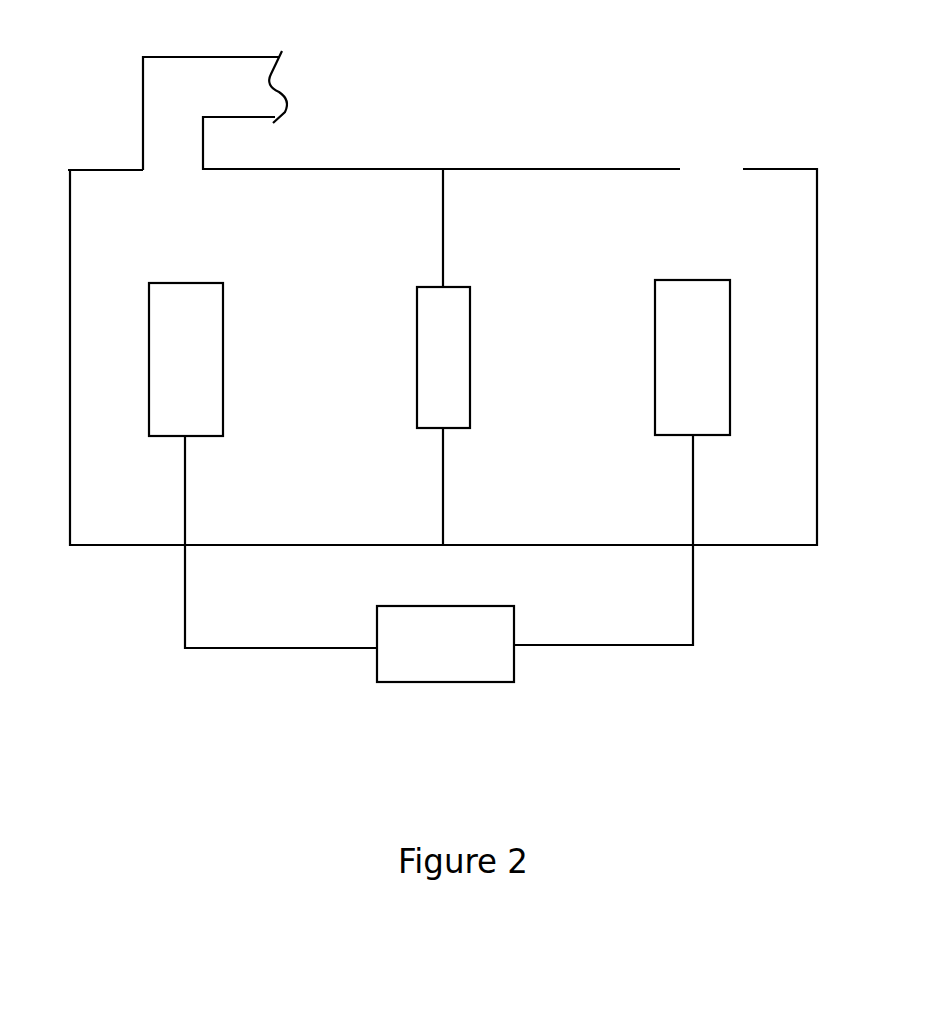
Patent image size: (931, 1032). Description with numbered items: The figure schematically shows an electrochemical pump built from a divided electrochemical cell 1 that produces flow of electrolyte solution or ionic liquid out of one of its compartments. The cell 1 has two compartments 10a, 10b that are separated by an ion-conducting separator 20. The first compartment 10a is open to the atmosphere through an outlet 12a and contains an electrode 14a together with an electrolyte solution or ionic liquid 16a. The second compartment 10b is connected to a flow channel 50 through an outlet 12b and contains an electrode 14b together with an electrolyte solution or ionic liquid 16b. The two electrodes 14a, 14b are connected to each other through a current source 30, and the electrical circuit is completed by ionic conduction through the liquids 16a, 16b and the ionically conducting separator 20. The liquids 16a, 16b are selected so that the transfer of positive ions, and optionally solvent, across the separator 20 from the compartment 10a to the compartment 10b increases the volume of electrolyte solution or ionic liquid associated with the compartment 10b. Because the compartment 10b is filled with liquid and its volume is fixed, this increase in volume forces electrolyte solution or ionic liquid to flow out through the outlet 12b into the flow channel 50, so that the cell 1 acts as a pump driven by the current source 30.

The divided electrochemical cell 1 is at (486, 56).
The compartment 10a is at (620, 544).
The compartment 10b is at (253, 545).
The outlet 12a is at (715, 172).
The outlet 12b is at (172, 170).
The electrode 14a is at (622, 462).
The electrode 14b is at (263, 465).
The electrolyte solution or ionic liquid 16a is at (564, 357).
The electrolyte solution or ionic liquid 16b is at (316, 358).
The ion-conducting separator 20 is at (443, 357).
The current source 30 is at (445, 644).
The flow channel 50 is at (165, 88).